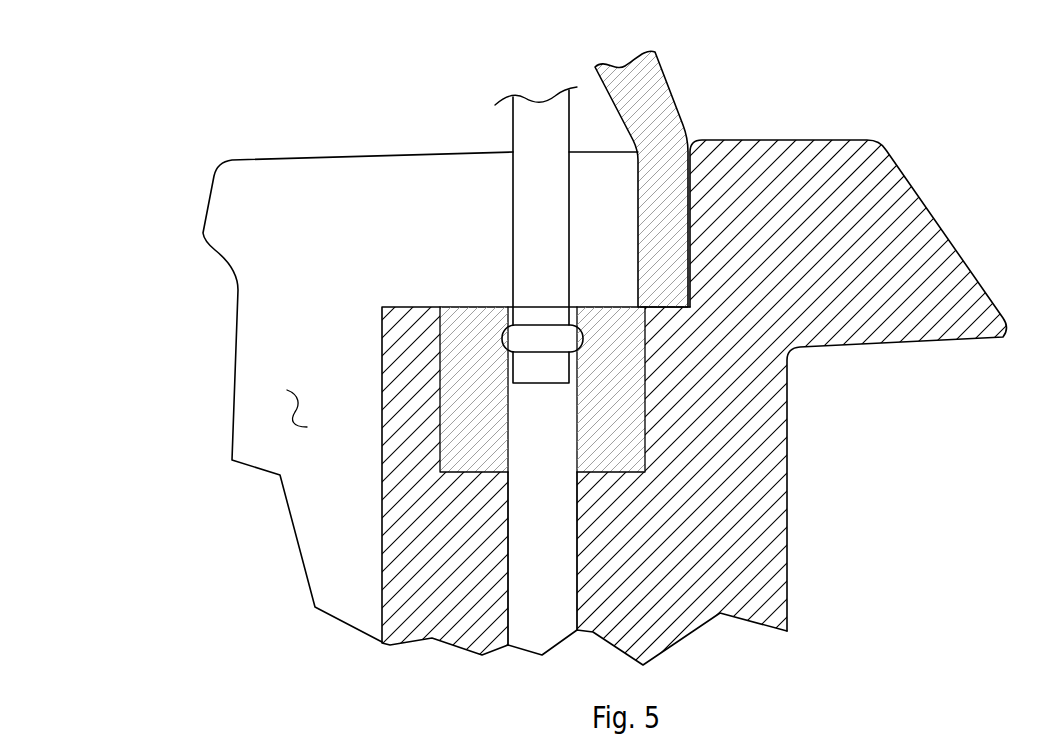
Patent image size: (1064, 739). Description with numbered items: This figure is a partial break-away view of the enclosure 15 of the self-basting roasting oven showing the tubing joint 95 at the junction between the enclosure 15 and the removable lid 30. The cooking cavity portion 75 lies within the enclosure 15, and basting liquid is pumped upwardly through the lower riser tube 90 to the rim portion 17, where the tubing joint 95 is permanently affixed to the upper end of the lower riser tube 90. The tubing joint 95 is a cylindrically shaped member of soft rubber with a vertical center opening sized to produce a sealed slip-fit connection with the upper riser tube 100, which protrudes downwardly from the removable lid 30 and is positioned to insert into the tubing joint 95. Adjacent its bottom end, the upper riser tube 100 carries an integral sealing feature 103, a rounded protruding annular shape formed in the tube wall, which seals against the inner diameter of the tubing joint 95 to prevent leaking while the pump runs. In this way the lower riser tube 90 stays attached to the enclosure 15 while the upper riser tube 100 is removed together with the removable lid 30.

The enclosure 15 is at (615, 603).
The rim portion 17 is at (887, 238).
The removable lid 30 is at (675, 93).
The cooking cavity portion 75 is at (293, 408).
The lower riser tube 90 is at (540, 490).
The tubing joint 95 is at (467, 427).
The upper riser tube 100 is at (513, 227).
The sealing feature 103 is at (502, 332).